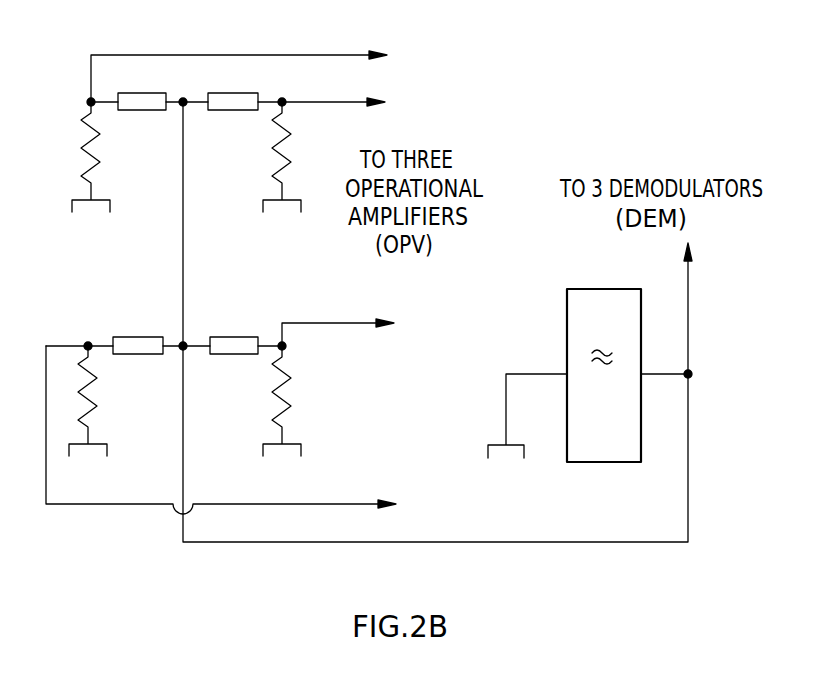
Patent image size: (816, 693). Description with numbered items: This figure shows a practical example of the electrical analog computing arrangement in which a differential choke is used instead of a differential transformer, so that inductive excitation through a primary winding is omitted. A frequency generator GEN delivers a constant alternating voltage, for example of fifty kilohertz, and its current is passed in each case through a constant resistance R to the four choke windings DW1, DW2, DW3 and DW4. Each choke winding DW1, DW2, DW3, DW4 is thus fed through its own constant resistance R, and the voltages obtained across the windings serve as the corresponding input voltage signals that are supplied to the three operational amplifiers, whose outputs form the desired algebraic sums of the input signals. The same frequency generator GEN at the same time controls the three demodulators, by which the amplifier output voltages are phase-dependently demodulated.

The constant resistance R is at (185, 211).
The choke winding DW1 is at (114, 157).
The choke winding DW2 is at (299, 157).
The choke winding DW3 is at (303, 401).
The choke winding DW4 is at (108, 401).
The frequency generator GEN is at (588, 375).